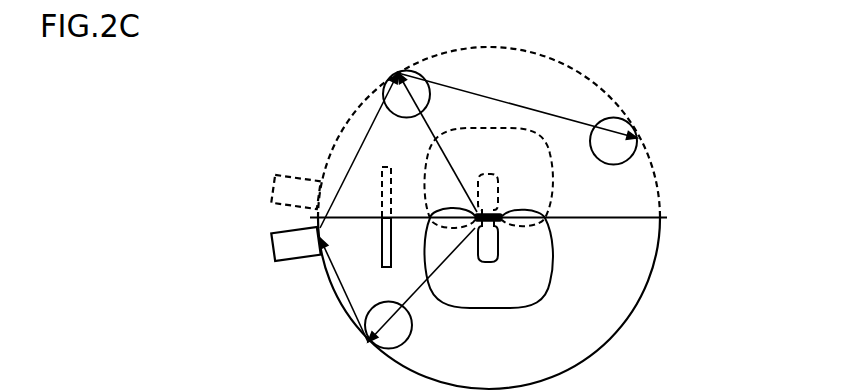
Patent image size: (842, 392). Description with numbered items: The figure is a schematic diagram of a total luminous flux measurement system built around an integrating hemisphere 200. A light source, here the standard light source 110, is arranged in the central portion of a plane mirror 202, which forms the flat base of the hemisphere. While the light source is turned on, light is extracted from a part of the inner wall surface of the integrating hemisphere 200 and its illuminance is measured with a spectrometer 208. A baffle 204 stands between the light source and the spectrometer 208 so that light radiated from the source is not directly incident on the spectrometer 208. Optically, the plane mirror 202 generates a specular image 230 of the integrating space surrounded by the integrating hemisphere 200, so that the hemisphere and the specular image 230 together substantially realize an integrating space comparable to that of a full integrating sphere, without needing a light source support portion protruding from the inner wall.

The integrating hemisphere 200 is at (643, 287).
The plane mirror 202 is at (585, 217).
The standard light source 110 is at (488, 253).
The baffle 204 is at (382, 247).
The spectrometer 208 is at (295, 248).
The specular image 230 is at (677, 47).